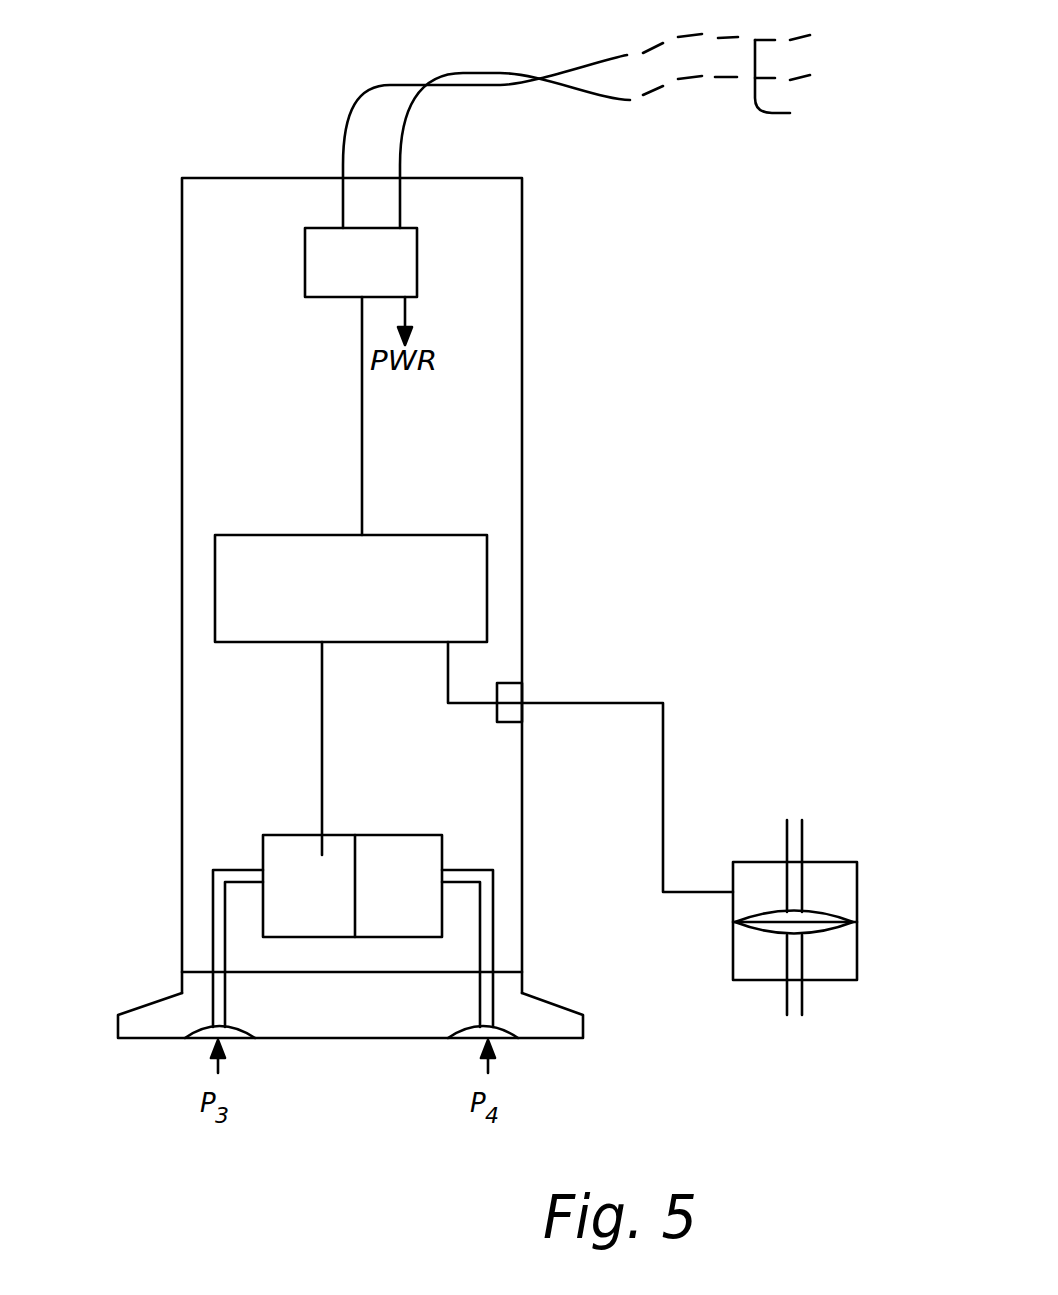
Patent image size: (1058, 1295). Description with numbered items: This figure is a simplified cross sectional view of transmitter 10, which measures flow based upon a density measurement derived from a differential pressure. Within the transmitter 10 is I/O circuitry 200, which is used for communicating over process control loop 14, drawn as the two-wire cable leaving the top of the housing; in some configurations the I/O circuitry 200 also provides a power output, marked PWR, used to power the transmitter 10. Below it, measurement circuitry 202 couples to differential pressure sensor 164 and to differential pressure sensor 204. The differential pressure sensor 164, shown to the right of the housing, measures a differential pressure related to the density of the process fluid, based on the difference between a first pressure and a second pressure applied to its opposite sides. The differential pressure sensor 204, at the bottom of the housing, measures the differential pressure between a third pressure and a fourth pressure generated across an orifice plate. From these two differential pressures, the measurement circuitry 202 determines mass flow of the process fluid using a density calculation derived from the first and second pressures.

The transmitter 10 is at (167, 362).
The process control loop 14 is at (727, 79).
The I/O circuitry 200 is at (417, 255).
The measurement circuitry 202 is at (487, 600).
The differential pressure sensor 204 is at (290, 835).
The differential pressure sensor 164 is at (857, 887).